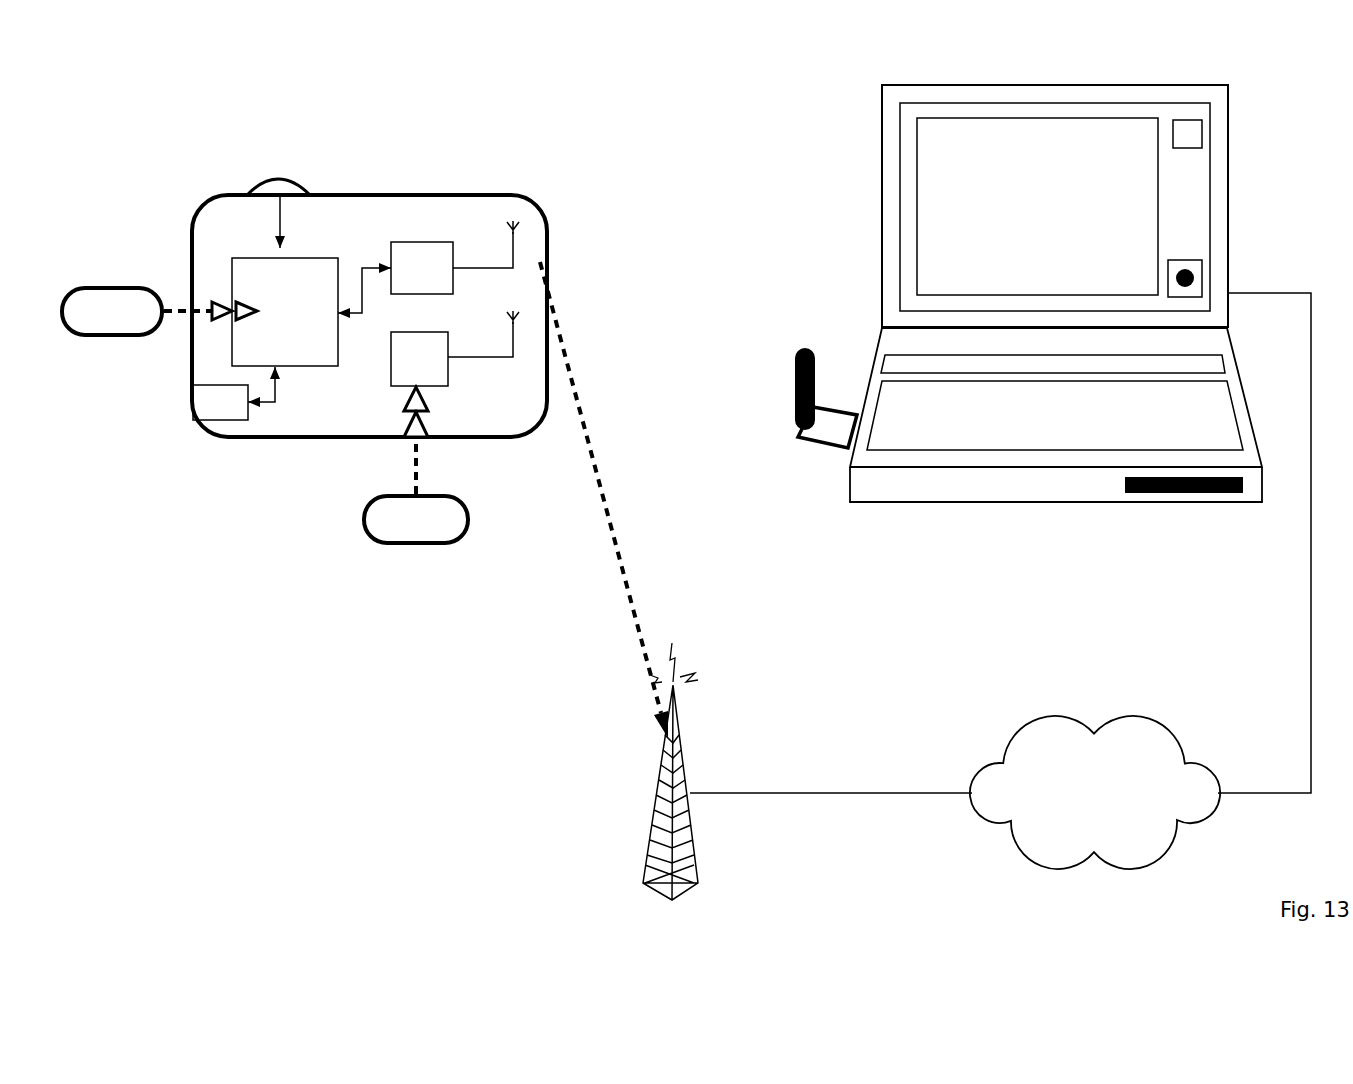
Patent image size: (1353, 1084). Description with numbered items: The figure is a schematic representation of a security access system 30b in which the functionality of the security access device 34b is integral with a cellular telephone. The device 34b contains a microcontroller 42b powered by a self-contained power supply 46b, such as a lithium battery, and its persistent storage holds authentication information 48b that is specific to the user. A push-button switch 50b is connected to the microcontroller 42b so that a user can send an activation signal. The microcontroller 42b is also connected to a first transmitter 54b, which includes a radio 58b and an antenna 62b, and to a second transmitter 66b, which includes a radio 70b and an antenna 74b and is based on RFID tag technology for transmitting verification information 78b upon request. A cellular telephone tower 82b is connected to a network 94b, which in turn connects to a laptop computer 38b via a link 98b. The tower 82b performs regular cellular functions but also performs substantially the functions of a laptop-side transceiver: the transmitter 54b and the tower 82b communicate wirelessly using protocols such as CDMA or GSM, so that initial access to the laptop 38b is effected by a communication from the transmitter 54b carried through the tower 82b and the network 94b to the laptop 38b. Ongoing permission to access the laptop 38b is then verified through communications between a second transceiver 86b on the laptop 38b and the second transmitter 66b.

The security access system 30b is at (278, 745).
The security access device 34b is at (345, 447).
The laptop computer 38b is at (1000, 508).
The microcontroller 42b is at (311, 312).
The power supply 46b is at (234, 393).
The authentication information 48b is at (159, 311).
The push-button switch 50b is at (242, 182).
The first transmitter 54b is at (493, 223).
The radio 58b is at (422, 268).
The antenna 62b is at (513, 218).
The second transmitter 66b is at (487, 322).
The radio 70b is at (419, 359).
The antenna 74b is at (513, 309).
The verification information 78b is at (416, 465).
The cellular telephone tower 82b is at (640, 828).
The second transceiver 86b is at (795, 385).
The network 94b is at (1095, 792).
The link 98b is at (1305, 578).